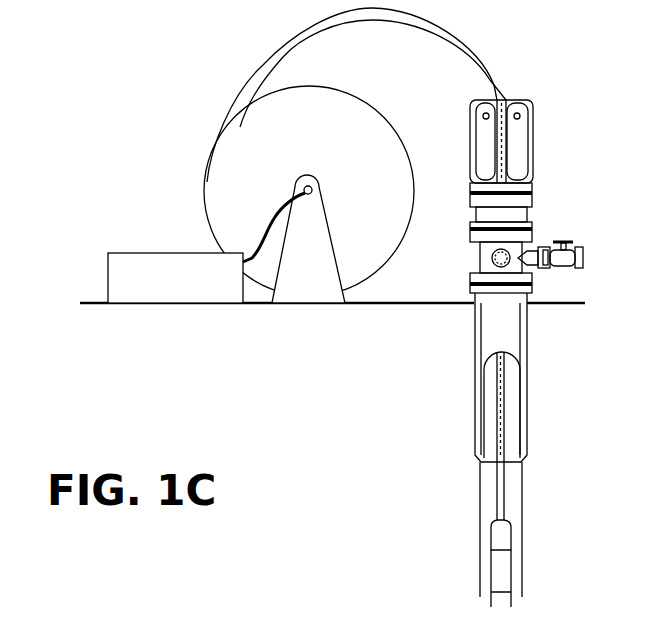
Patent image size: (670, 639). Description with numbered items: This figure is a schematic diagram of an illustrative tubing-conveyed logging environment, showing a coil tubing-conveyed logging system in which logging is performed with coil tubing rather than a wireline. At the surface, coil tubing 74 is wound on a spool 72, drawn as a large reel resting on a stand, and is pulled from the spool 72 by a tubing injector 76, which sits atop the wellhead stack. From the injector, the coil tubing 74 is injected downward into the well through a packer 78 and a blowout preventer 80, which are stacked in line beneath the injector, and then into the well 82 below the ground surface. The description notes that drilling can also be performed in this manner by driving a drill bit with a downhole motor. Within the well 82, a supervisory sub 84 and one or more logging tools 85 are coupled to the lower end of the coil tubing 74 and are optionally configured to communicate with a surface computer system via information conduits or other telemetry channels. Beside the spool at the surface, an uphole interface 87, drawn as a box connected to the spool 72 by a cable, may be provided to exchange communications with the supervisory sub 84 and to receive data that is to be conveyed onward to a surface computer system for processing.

The spool 72 is at (308, 156).
The coil tubing 74 is at (249, 66).
The tubing injector 76 is at (528, 128).
The packer 78 is at (530, 212).
The blowout preventer 80 is at (480, 257).
The well 82 is at (522, 347).
The supervisory sub 84 is at (512, 535).
The logging tools 85 is at (512, 578).
The uphole interface 87 is at (152, 252).